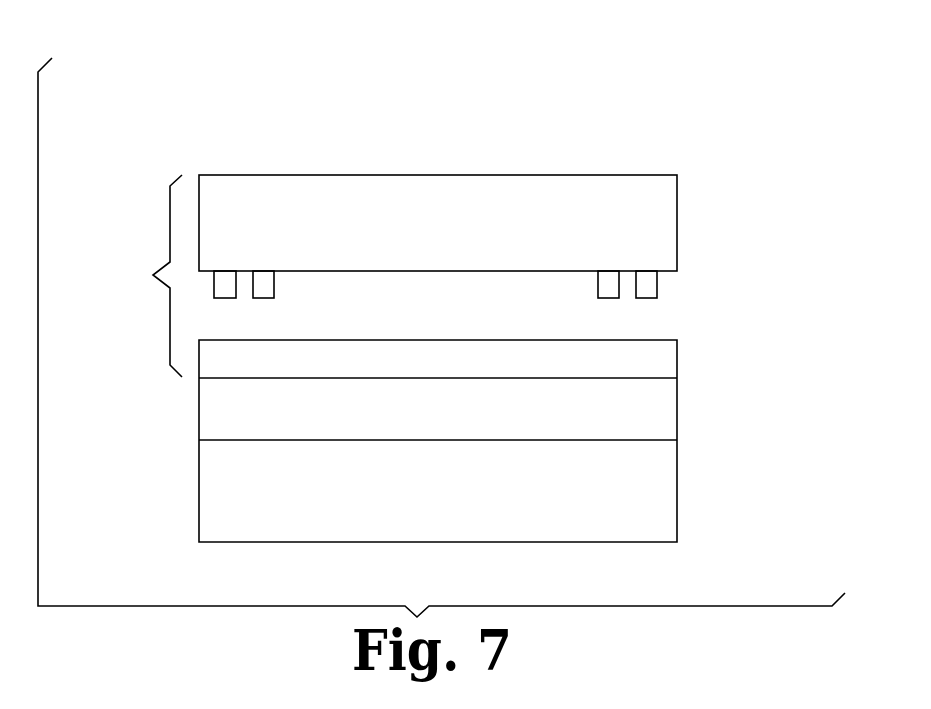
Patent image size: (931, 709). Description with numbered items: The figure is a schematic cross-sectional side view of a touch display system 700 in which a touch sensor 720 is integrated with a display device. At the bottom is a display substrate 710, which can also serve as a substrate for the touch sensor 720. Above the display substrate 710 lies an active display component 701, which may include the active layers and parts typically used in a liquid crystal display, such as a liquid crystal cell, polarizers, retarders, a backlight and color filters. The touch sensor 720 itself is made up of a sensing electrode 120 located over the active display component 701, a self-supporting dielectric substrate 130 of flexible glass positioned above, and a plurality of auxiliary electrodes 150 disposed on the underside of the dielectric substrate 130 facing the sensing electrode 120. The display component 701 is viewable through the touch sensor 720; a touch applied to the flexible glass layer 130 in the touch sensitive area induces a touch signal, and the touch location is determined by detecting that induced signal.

The touch display system 700 is at (162, 117).
The self-supporting dielectric substrate 130 is at (679, 207).
The auxiliary electrodes 150 is at (658, 286).
The sensing electrode 120 is at (665, 360).
The active display component 701 is at (665, 415).
The display substrate 710 is at (665, 490).
The touch sensor 720 is at (137, 276).